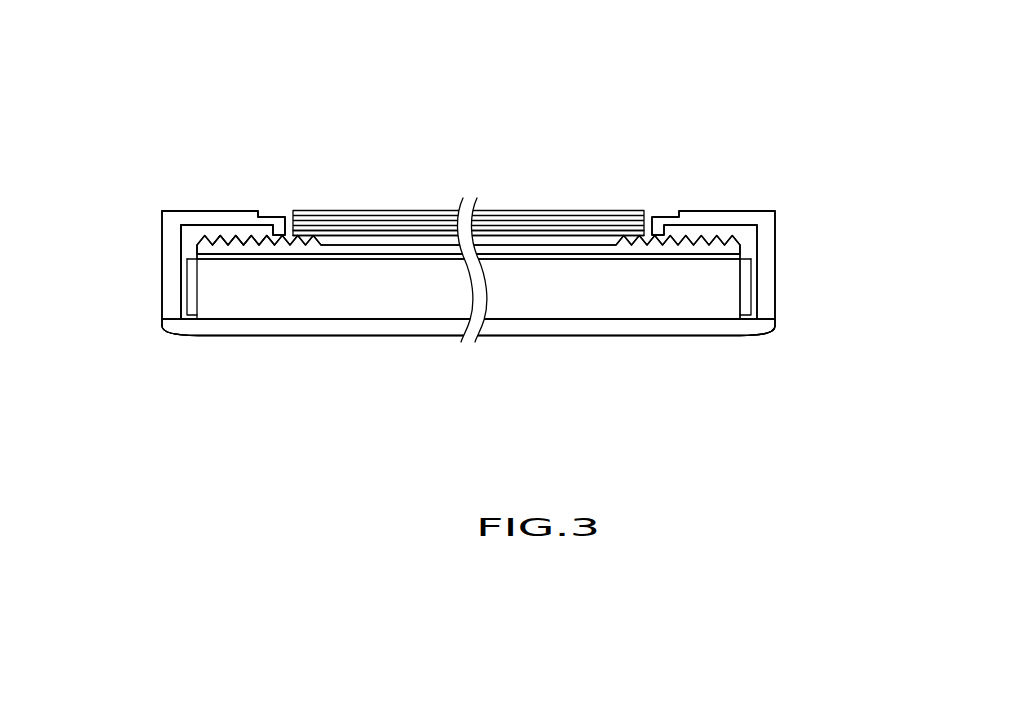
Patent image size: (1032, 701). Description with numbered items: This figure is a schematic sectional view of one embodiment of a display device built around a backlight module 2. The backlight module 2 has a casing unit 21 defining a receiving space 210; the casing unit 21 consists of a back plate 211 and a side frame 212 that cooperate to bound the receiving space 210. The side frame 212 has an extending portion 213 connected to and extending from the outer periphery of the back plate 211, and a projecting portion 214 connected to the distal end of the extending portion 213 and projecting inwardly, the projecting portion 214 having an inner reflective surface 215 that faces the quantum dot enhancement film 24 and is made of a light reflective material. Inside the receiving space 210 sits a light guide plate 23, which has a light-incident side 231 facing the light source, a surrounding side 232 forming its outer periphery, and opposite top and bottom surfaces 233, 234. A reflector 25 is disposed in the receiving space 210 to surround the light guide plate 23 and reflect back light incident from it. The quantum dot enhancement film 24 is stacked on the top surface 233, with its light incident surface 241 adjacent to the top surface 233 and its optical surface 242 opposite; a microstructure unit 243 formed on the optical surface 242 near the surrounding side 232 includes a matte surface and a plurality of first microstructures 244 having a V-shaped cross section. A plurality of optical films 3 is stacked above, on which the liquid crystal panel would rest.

The backlight module 2 is at (452, 136).
The optical films 3 is at (584, 190).
The casing unit 21 is at (791, 220).
The receiving space 210 is at (740, 238).
The back plate 211 is at (618, 328).
The side frame 212 is at (145, 137).
The extending portion 213 is at (162, 233).
The projecting portion 214 is at (196, 210).
The inner reflective surface 215 is at (707, 236).
The light guide plate 23 is at (291, 337).
The light-incident side 231 is at (537, 313).
The surrounding side 232 is at (740, 302).
The top surface 233 is at (541, 255).
The bottom surface 234 is at (675, 320).
The quantum dot enhancement film 24 is at (369, 280).
The light incident surface 241 is at (422, 257).
The optical surface 242 is at (416, 246).
The microstructure unit 243 is at (250, 240).
The first microstructures 244 is at (232, 237).
The reflector 25 is at (186, 277).